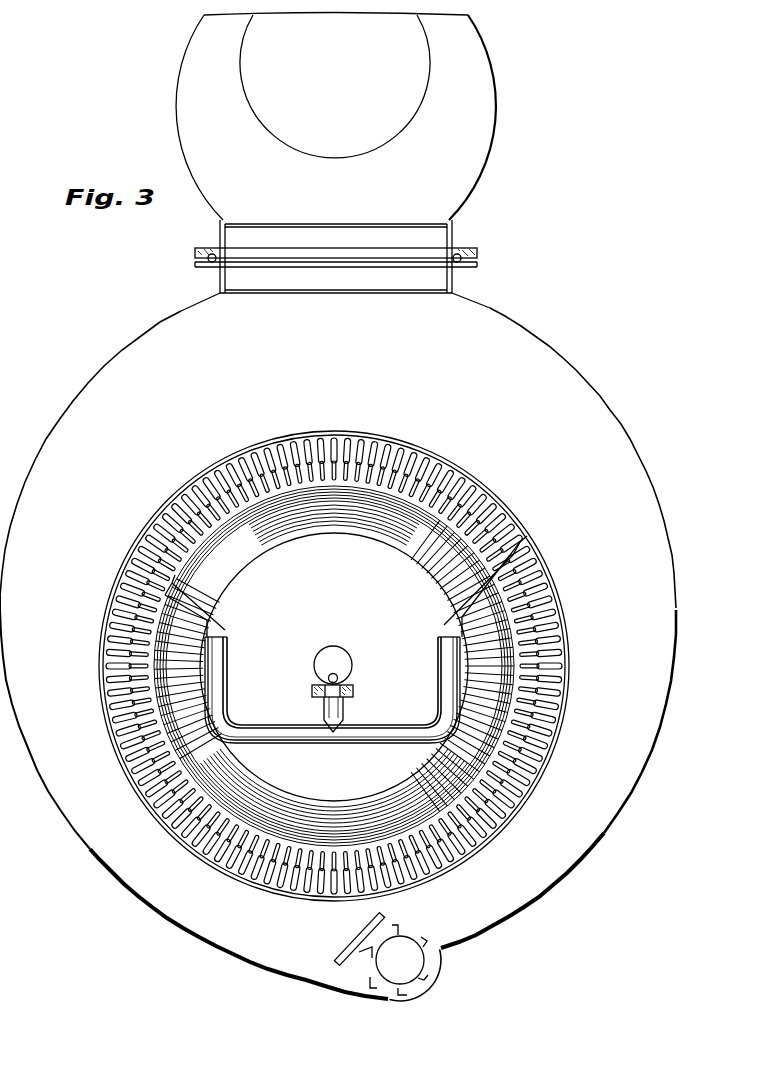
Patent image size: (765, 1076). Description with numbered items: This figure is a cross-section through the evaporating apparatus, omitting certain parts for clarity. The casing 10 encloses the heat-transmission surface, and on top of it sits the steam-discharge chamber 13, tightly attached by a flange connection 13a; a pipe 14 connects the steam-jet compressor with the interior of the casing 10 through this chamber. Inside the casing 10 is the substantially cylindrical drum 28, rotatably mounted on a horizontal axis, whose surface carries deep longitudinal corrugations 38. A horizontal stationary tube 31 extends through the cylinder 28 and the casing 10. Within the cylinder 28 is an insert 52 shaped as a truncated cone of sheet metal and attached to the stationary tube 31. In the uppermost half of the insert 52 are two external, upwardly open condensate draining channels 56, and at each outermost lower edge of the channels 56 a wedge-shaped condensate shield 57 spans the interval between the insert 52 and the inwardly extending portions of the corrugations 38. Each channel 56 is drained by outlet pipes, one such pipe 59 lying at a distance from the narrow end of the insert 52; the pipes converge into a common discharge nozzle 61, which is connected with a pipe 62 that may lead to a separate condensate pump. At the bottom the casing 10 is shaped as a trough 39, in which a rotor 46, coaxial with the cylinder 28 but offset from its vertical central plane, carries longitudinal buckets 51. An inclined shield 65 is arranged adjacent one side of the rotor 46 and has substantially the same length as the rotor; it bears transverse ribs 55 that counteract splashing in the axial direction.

The casing 10 is at (593, 393).
The steam-discharge chamber 13 is at (498, 97).
The pipe 14 is at (407, 44).
The flange connection 13a is at (477, 258).
The cylindrical drum 28 is at (507, 798).
The longitudinal corrugations 38 is at (545, 622).
The insert 52 is at (488, 653).
The condensate draining channels 56 is at (213, 630).
The wedge-shaped condensate shield 57 is at (173, 598).
The outlet pipe 59 is at (217, 683).
The stationary tube 31 is at (343, 648).
The pipe 62 is at (327, 677).
The discharge nozzle 61 is at (333, 708).
The trough 39 is at (433, 983).
The longitudinal buckets 51 is at (457, 938).
The shield 65 is at (347, 942).
The transverse ribs 55 is at (343, 965).
The rotor 46 is at (388, 987).